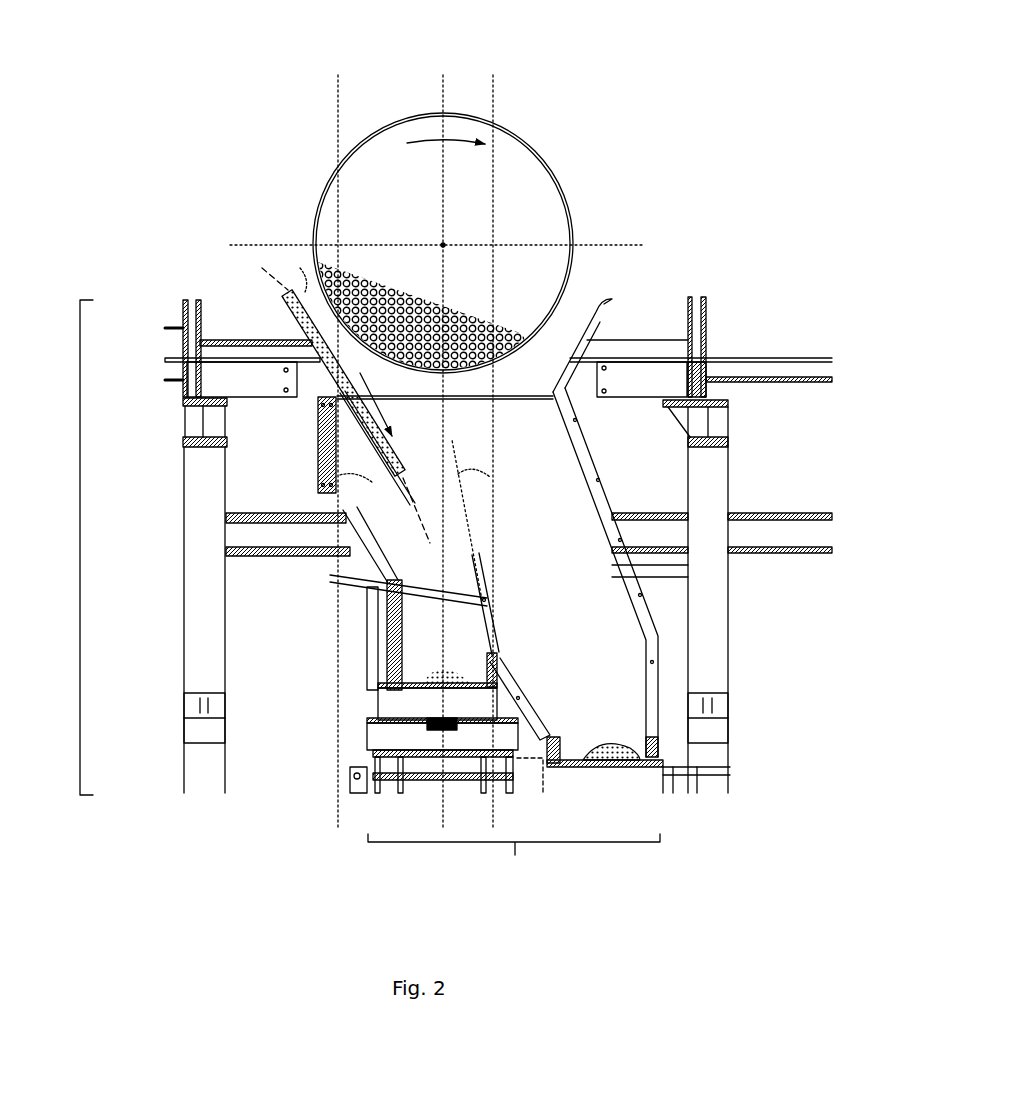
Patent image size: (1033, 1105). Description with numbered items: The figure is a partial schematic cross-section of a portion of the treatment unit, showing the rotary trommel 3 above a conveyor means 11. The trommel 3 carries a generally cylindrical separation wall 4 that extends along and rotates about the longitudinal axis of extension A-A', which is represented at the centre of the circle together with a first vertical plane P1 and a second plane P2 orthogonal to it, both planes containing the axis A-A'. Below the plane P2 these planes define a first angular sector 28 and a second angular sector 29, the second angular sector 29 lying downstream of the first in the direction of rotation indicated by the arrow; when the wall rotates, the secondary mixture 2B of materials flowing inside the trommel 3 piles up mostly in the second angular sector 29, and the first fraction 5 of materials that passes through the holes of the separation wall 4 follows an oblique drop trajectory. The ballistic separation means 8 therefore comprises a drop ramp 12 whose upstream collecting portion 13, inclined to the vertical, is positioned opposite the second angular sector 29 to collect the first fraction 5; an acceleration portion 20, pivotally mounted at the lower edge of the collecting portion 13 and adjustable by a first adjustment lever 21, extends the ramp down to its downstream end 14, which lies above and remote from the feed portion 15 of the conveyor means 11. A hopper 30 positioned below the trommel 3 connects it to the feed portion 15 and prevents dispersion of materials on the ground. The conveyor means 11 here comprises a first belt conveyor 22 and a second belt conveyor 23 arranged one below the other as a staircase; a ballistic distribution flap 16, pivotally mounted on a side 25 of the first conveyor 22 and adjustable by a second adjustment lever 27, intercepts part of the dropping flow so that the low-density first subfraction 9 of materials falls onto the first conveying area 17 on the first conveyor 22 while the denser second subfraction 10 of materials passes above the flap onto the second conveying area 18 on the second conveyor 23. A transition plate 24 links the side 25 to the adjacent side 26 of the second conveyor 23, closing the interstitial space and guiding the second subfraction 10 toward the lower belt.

The trommel 3 is at (472, 88).
The separation wall 4 is at (520, 137).
The secondary mixture of materials 2B is at (365, 275).
The first vertical plane P1 is at (442, 96).
The second plane P2 is at (280, 247).
The longitudinal axis of extension A-A' is at (555, 193).
The first angular sector 28 is at (598, 307).
The second angular sector 29 is at (292, 290).
The hopper 30 is at (603, 488).
The collecting portion 13 is at (285, 312).
The drop ramp 12 is at (312, 345).
The first fraction of materials 5 is at (300, 388).
The acceleration portion 20 is at (350, 437).
The first adjustment lever 21 is at (320, 466).
The downstream end 14 is at (292, 537).
The ballistic separation means 8 is at (78, 548).
The second adjustment lever 27 is at (345, 582).
The first subfraction of materials 9 is at (420, 670).
The first conveying area 17 is at (375, 684).
The first belt conveyor 22 is at (410, 702).
The adjacent side of the second conveyor 26 is at (490, 717).
The ballistic distribution flap 16 is at (496, 623).
The transition plate 24 is at (535, 700).
The conveyor means 11 is at (528, 798).
The side of the first conveyor 25 is at (557, 748).
The second conveying area 18 is at (660, 763).
The second subfraction of materials 10 is at (636, 748).
The second belt conveyor 23 is at (640, 783).
The feed portion 15 is at (505, 820).